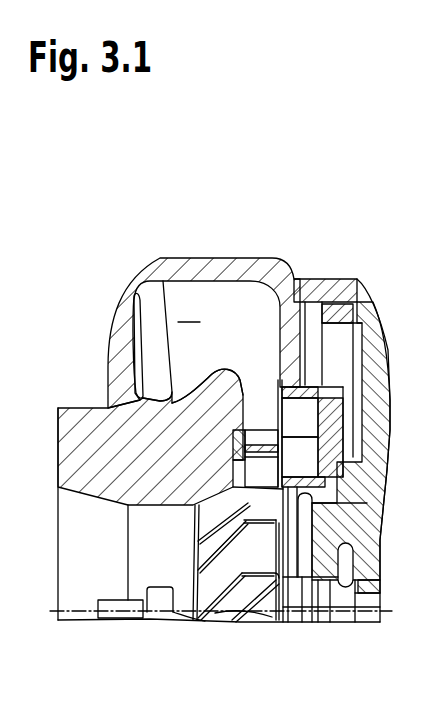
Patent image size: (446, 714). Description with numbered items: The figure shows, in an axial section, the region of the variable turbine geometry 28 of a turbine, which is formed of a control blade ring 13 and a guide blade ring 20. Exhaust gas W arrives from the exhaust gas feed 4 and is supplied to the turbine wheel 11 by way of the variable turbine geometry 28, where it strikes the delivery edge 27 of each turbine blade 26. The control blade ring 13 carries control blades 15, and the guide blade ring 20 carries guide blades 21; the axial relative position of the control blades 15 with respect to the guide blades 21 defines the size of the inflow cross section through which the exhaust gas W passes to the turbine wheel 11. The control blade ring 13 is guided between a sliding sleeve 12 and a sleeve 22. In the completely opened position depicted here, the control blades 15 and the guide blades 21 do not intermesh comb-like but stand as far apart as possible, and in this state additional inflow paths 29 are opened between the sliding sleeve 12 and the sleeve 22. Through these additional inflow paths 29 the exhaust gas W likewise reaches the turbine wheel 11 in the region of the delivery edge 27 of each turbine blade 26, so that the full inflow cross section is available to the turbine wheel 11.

The exhaust gas feed 4 is at (143, 305).
The turbine wheel 11 is at (174, 615).
The sliding sleeve 12 is at (293, 520).
The control blade ring 13 is at (305, 403).
The control blades 15 is at (297, 440).
The guide blade ring 20 is at (233, 430).
The guide blades 21 is at (263, 447).
The sleeve 22 is at (341, 392).
The turbine blade 26 is at (258, 503).
The delivery edge 27 is at (286, 480).
The variable turbine geometry 28 is at (320, 245).
The additional inflow paths 29 is at (298, 458).